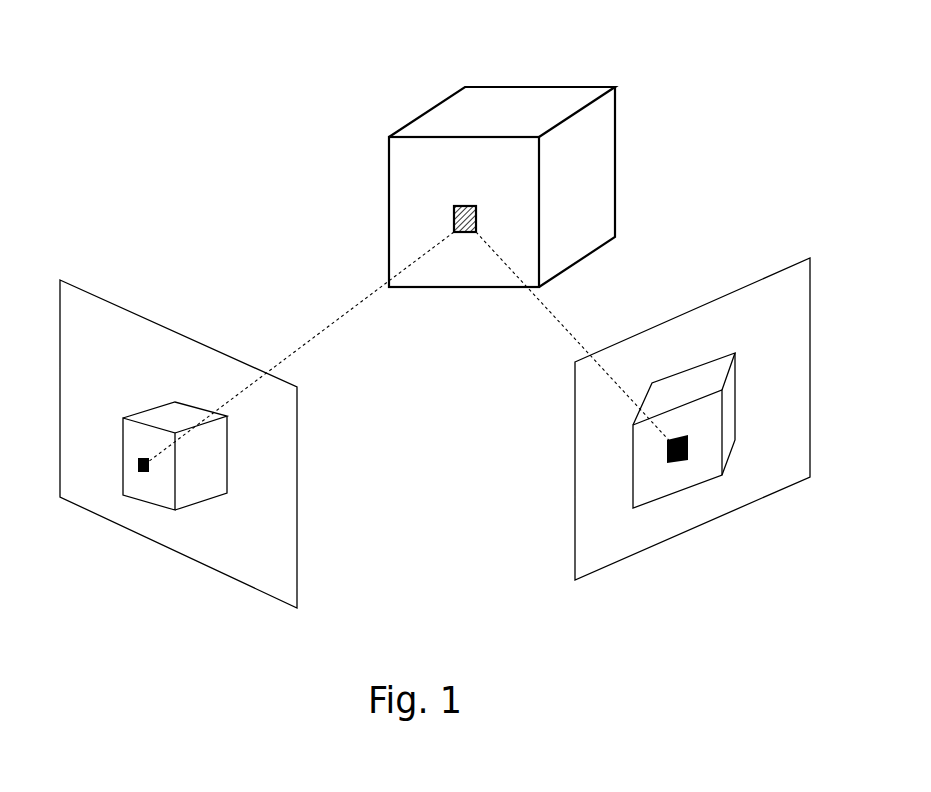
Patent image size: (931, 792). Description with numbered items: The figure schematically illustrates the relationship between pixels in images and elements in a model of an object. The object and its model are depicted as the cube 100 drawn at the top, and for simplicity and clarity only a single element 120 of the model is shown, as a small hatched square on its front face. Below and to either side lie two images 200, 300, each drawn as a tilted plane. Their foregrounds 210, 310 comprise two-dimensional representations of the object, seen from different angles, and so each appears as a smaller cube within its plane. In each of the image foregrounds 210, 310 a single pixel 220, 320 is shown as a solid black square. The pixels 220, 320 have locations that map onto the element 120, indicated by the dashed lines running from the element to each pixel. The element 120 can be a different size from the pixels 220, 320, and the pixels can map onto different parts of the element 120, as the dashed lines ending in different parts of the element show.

The three-dimensional object (cube) 100 is at (608, 71).
The element 120 is at (454, 215).
The image 200 is at (727, 277).
The foreground 210 is at (708, 468).
The pixel 220 is at (667, 458).
The image 300 is at (145, 309).
The foreground 310 is at (193, 497).
The pixel 320 is at (140, 470).